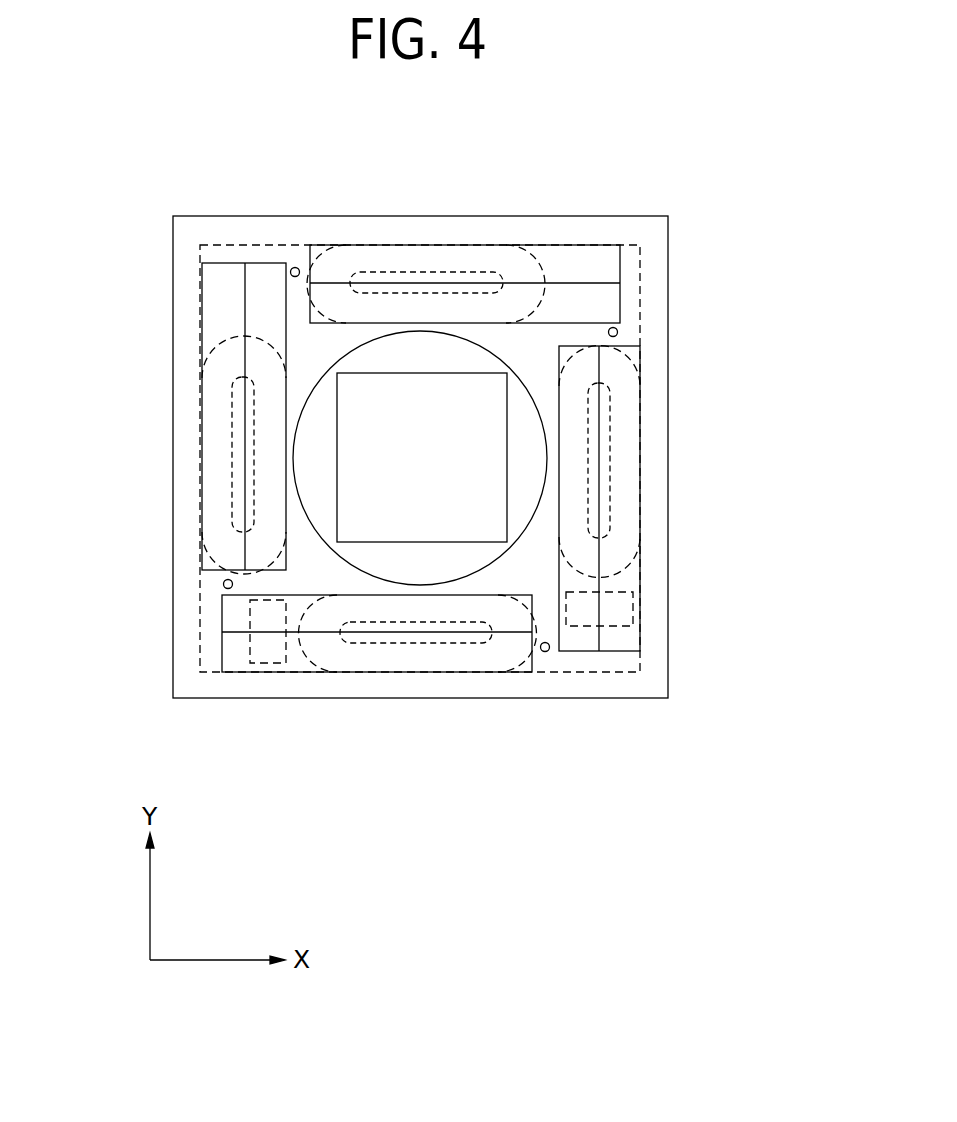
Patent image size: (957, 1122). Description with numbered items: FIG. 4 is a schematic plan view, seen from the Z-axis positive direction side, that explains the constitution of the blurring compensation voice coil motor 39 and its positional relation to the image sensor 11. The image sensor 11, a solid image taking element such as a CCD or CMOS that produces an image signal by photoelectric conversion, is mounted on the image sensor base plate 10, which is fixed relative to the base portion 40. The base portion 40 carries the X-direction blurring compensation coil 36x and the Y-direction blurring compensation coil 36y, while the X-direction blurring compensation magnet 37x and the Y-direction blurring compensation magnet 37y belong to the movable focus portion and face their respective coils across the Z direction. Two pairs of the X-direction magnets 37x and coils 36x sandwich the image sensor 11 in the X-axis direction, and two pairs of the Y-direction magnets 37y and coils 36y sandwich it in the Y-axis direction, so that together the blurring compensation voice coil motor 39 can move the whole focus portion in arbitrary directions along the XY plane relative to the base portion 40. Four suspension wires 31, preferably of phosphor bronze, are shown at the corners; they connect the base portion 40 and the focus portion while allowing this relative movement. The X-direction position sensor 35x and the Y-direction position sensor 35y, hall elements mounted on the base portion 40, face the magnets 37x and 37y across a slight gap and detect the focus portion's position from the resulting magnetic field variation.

The image sensor base plate 10 is at (195, 302).
The image sensor 11 is at (440, 403).
The suspension wire 31 is at (296, 268).
The X-direction position sensor 35x is at (618, 610).
The Y-direction position sensor 35y is at (262, 667).
The X-direction blurring compensation coil 36x is at (210, 382).
The Y-direction blurring compensation coil 36y is at (512, 257).
The X-direction blurring compensation magnet 37x is at (267, 280).
The Y-direction blurring compensation magnet 37y is at (612, 303).
The blurring compensation voice coil motor 39 is at (695, 685).
The base portion 40 is at (668, 472).